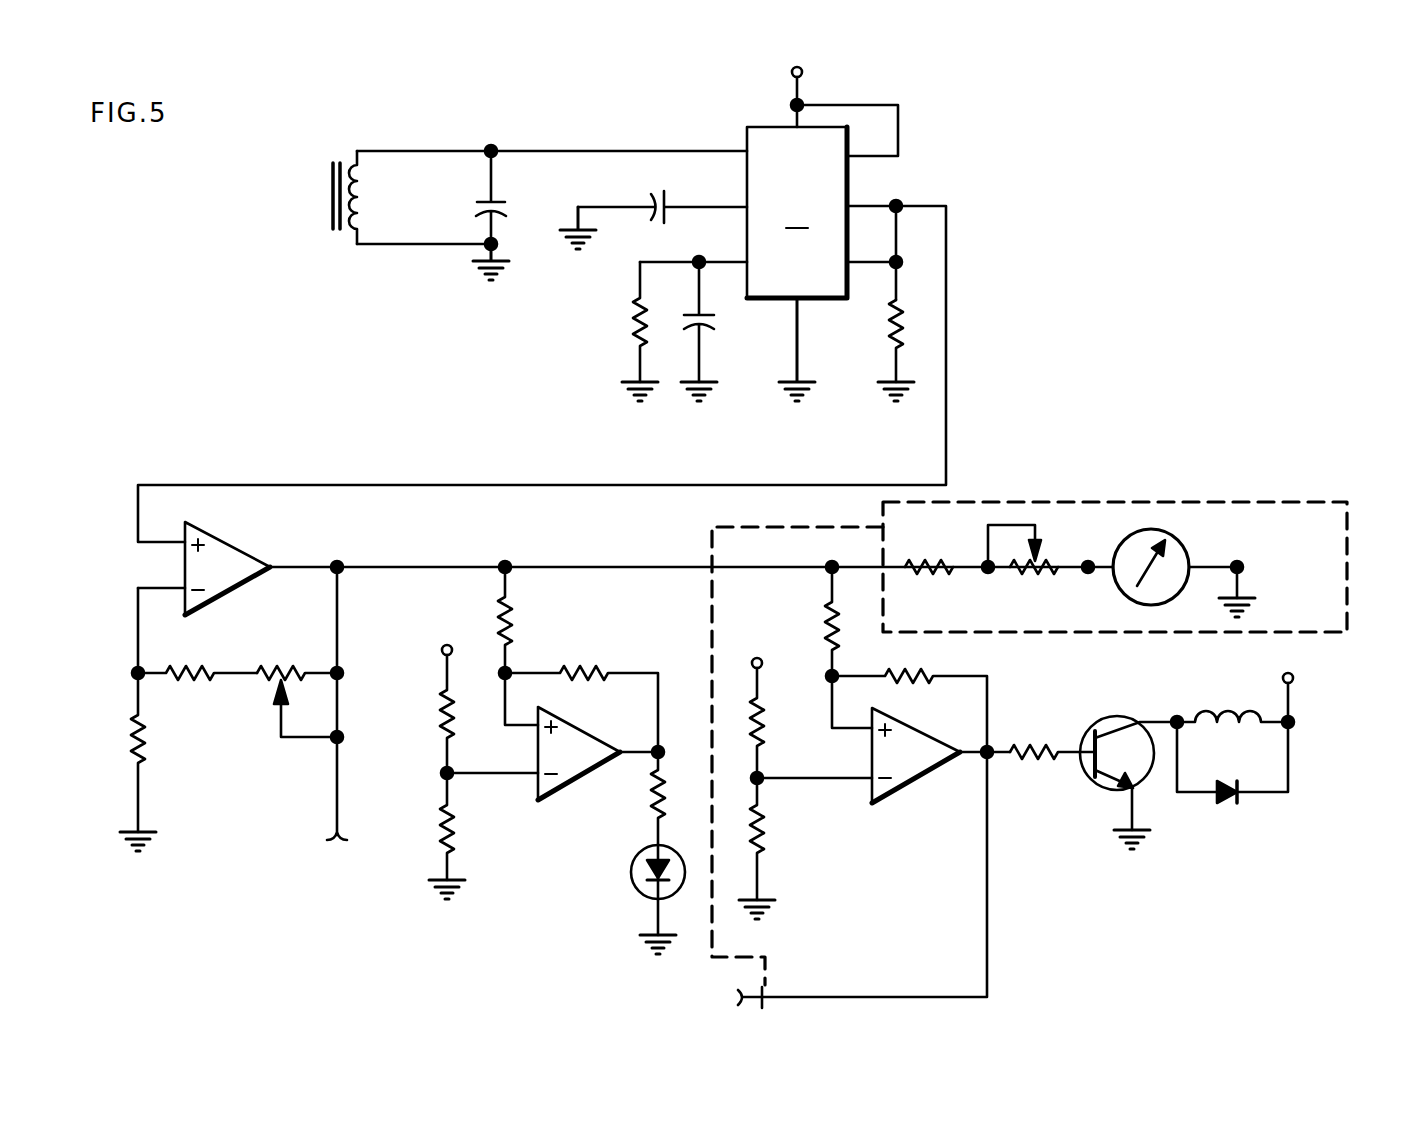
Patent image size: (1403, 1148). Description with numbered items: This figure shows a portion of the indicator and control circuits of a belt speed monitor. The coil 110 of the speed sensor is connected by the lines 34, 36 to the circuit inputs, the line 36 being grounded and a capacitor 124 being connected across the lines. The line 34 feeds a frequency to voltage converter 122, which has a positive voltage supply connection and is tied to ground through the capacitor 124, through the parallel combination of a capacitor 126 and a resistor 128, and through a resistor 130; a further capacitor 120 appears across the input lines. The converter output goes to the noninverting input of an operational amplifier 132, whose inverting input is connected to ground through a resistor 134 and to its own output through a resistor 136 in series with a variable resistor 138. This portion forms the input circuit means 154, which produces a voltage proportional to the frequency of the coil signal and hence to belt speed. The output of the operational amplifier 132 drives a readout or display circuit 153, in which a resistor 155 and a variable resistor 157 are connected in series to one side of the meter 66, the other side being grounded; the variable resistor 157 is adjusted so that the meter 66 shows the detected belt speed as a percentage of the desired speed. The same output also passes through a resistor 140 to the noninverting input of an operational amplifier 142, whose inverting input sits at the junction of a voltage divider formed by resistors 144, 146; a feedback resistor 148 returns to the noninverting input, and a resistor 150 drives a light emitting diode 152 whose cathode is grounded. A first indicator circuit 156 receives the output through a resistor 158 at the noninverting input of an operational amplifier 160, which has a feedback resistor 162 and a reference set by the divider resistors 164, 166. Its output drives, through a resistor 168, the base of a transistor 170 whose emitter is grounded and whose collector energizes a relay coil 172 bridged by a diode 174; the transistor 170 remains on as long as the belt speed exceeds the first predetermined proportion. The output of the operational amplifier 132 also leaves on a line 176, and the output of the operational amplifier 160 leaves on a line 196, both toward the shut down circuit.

The line 34 is at (424, 151).
The line 36 is at (398, 244).
The coil 110 is at (357, 200).
The capacitor 120 is at (500, 202).
The frequency to voltage converter 122 is at (542, 299).
The capacitor 124 is at (654, 203).
The capacitor 126 is at (712, 325).
The resistor 128 is at (630, 325).
The resistor 130 is at (890, 328).
The operational amplifier 132 is at (233, 550).
The resistor 134 is at (150, 733).
The resistor 136 is at (182, 673).
The variable resistor 138 is at (282, 673).
The resistor 140 is at (515, 636).
The operational amplifier 142 is at (538, 797).
The resistor 144 is at (440, 705).
The resistor 146 is at (440, 831).
The feedback resistor 148 is at (600, 673).
The resistor 150 is at (655, 800).
The light emitting diode 152 is at (633, 867).
The readout or display circuit 153 is at (1086, 503).
The input circuit means 154 is at (972, 421).
The resistor 155 is at (935, 560).
The first indicator circuit 156 is at (711, 543).
The variable resistor 157 is at (1050, 563).
The resistor 158 is at (832, 621).
The operational amplifier 160 is at (915, 784).
The feedback resistor 162 is at (920, 676).
The resistor 164 is at (762, 725).
The resistor 166 is at (765, 840).
The resistor 168 is at (1032, 766).
The transistor 170 is at (1100, 790).
The coil 172 is at (1208, 711).
The diode 174 is at (1225, 802).
The line 176 is at (333, 797).
The meter 66 is at (1181, 545).
The line 196 is at (845, 997).